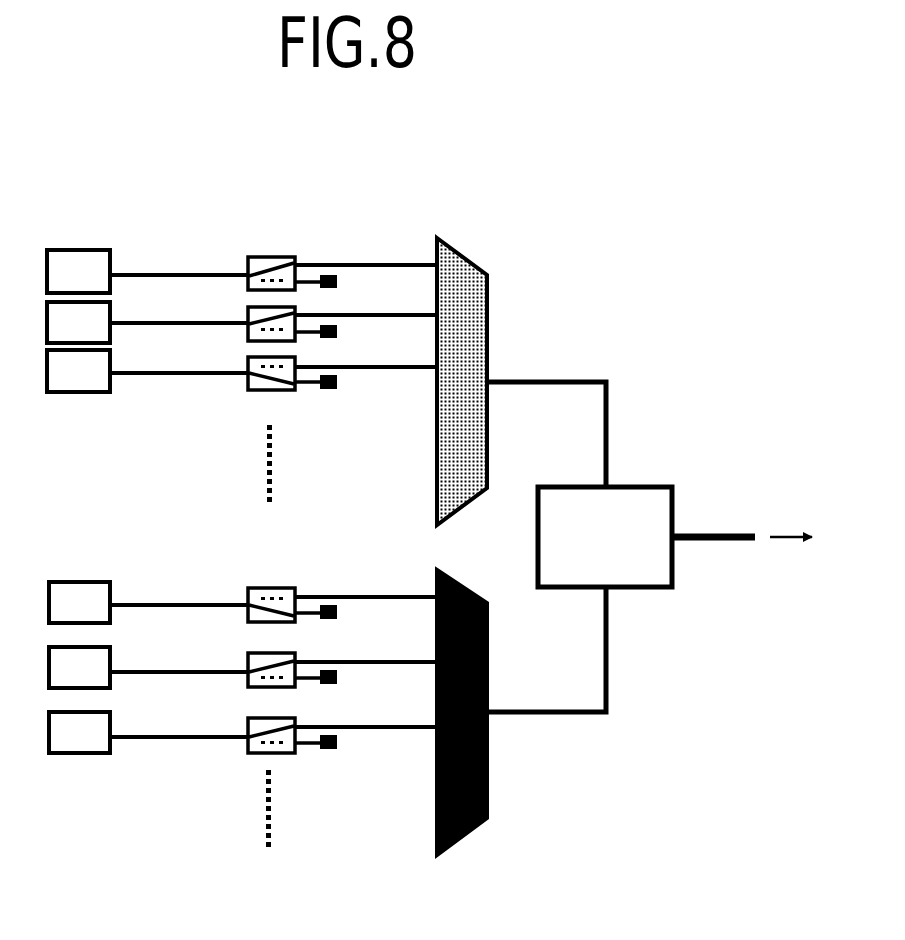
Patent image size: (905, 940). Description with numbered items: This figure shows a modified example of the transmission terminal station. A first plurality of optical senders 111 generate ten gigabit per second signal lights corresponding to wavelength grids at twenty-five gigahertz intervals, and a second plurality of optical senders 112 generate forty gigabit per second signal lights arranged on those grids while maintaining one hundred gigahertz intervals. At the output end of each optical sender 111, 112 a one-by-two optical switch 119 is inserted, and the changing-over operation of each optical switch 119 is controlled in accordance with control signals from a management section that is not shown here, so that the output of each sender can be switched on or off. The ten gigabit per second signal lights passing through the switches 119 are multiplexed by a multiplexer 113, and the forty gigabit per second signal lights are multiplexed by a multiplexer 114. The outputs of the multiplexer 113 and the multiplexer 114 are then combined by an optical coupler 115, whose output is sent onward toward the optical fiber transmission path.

The optical senders 111 is at (61, 231).
The optical senders 112 is at (61, 551).
The multiplexer 113 is at (487, 302).
The multiplexer 114 is at (487, 687).
The optical coupler 115 is at (632, 487).
The 1×2 optical switches 119 is at (258, 238).